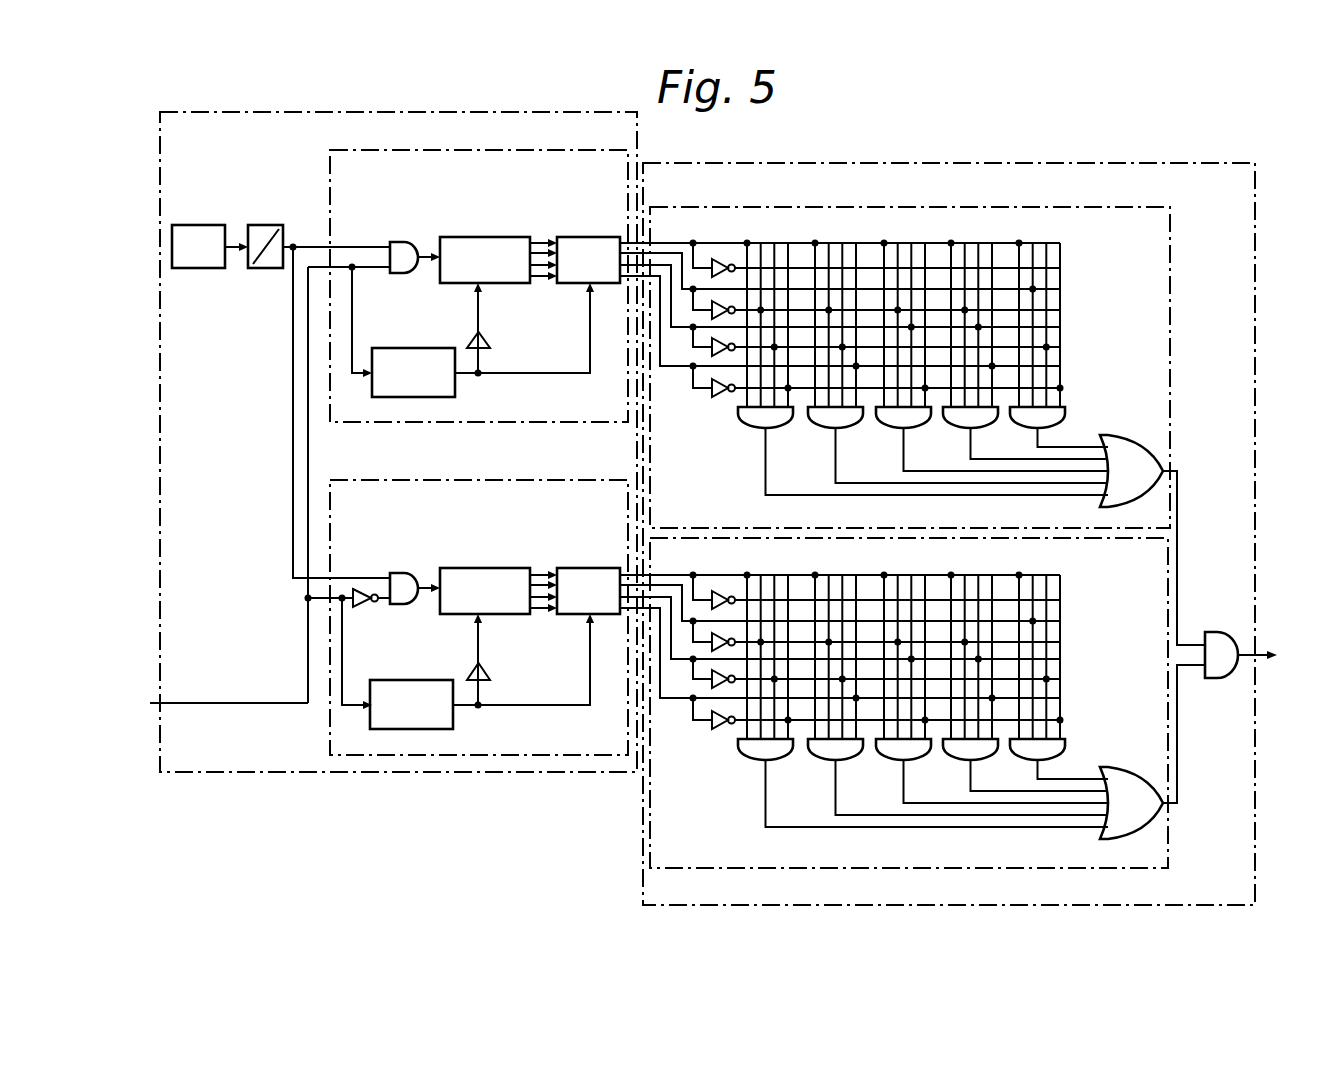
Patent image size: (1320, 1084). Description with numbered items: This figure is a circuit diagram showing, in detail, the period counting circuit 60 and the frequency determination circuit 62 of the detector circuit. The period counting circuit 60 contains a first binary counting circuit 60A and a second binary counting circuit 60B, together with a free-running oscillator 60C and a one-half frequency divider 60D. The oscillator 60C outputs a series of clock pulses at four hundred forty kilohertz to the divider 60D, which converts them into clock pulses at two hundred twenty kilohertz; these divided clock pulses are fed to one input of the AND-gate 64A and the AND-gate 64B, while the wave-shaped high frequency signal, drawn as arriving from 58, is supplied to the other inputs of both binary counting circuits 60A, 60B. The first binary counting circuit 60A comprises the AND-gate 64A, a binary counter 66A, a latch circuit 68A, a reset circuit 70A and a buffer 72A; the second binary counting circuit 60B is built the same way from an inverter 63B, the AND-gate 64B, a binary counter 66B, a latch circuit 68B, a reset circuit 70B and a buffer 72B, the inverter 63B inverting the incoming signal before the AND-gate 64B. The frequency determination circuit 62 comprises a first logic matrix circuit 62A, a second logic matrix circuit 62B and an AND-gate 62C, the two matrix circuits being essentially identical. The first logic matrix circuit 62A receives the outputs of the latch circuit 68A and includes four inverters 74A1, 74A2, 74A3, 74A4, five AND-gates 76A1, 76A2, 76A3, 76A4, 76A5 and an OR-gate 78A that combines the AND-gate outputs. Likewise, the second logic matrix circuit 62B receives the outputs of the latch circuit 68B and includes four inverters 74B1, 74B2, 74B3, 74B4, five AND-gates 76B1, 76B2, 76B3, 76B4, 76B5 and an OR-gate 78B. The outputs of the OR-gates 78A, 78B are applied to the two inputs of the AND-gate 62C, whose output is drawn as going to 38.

The period counting circuit 60 is at (362, 106).
The first binary counting circuit 60A is at (434, 434).
The second binary counting circuit 60B is at (314, 720).
The free-running oscillator 60C is at (190, 268).
The one-half frequency divider 60D is at (265, 268).
The frequency determination circuit 62 is at (1088, 152).
The first logic matrix circuit 62A is at (1180, 218).
The second logic matrix circuit 62B is at (1129, 875).
The AND-gate 62C is at (1224, 632).
The inverter 63B is at (366, 608).
The AND-gate 64A is at (404, 242).
The AND-gate 64B is at (404, 573).
The binary counter 66A is at (487, 237).
The binary counter 66B is at (487, 568).
The latch circuit 68A is at (577, 237).
The latch circuit 68B is at (577, 568).
The reset circuit 70A is at (410, 348).
The reset circuit 70B is at (432, 680).
The buffer 72A is at (493, 341).
The buffer 72B is at (493, 672).
The inverter 74A1 is at (718, 259).
The inverter 74A2 is at (722, 302).
The inverter 74A3 is at (712, 352).
The inverter 74A4 is at (718, 398).
The inverter 74B1 is at (718, 591).
The inverter 74B2 is at (722, 634).
The inverter 74B3 is at (712, 684).
The inverter 74B4 is at (718, 730).
The AND-gate 76A1 is at (779, 430).
The AND-gate 76A2 is at (848, 430).
The AND-gate 76A3 is at (917, 430).
The AND-gate 76A4 is at (1003, 438).
The AND-gate 76A5 is at (1066, 418).
The AND-gate 76B1 is at (779, 762).
The AND-gate 76B2 is at (848, 762).
The AND-gate 76B3 is at (917, 762).
The AND-gate 76B4 is at (1003, 770).
The AND-gate 76B5 is at (1066, 750).
The OR-gate 78A is at (1137, 446).
The OR-gate 78B is at (1137, 778).
The input signal source (from 58) 58 is at (189, 705).
The output destination (to 38) 38 is at (1275, 656).